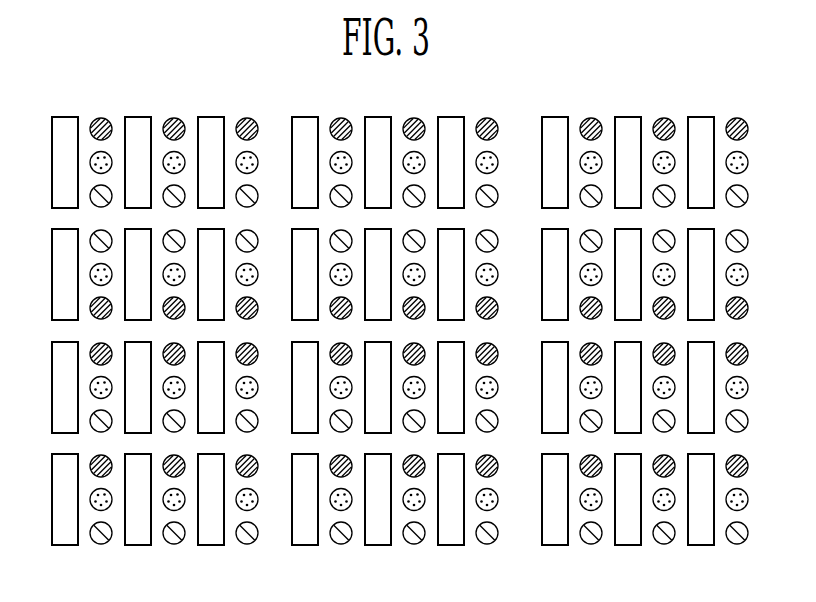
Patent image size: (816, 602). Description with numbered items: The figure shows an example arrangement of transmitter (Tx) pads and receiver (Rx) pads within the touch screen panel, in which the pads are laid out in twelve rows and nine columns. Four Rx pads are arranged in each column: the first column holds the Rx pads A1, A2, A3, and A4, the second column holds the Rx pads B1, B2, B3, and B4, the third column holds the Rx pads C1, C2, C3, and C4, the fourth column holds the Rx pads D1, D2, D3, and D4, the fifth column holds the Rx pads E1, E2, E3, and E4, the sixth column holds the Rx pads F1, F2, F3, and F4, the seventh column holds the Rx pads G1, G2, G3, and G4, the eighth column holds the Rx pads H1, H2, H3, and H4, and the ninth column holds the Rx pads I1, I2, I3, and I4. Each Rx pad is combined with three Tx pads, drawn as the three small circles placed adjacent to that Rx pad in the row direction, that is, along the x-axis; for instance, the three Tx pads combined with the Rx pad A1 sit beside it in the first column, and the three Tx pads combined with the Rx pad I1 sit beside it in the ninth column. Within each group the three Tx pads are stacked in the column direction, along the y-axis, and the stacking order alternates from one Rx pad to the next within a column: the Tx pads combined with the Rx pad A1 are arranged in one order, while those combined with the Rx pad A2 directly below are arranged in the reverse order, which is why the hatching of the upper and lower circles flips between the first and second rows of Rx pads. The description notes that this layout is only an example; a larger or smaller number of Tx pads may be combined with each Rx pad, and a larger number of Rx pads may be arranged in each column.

The Rx pad A1 is at (82, 162).
The cell B1 is at (155, 162).
The cell C1 is at (228, 162).
The cell D1 is at (322, 162).
The cell E1 is at (395, 162).
The cell F1 is at (468, 162).
The cell G1 is at (572, 162).
The cell H1 is at (645, 162).
The Rx pad I1 is at (718, 162).
The Rx pad A2 is at (82, 274).
The cell B2 is at (155, 274).
The cell C2 is at (228, 274).
The cell D2 is at (322, 274).
The cell E2 is at (395, 274).
The cell F2 is at (468, 274).
The cell G2 is at (572, 274).
The cell H2 is at (645, 274).
The Rx pad I2 is at (718, 274).
The Rx pad A3 is at (82, 387).
The cell B3 is at (155, 387).
The cell C3 is at (228, 387).
The cell D3 is at (322, 387).
The cell E3 is at (395, 387).
The cell F3 is at (468, 387).
The cell G3 is at (572, 387).
The cell H3 is at (645, 387).
The Rx pad I3 is at (718, 387).
The Rx pad A4 is at (82, 499).
The cell B4 is at (155, 499).
The cell C4 is at (228, 499).
The cell D4 is at (322, 499).
The cell E4 is at (395, 499).
The cell F4 is at (468, 499).
The cell G4 is at (572, 499).
The cell H4 is at (645, 499).
The Rx pad I4 is at (718, 499).